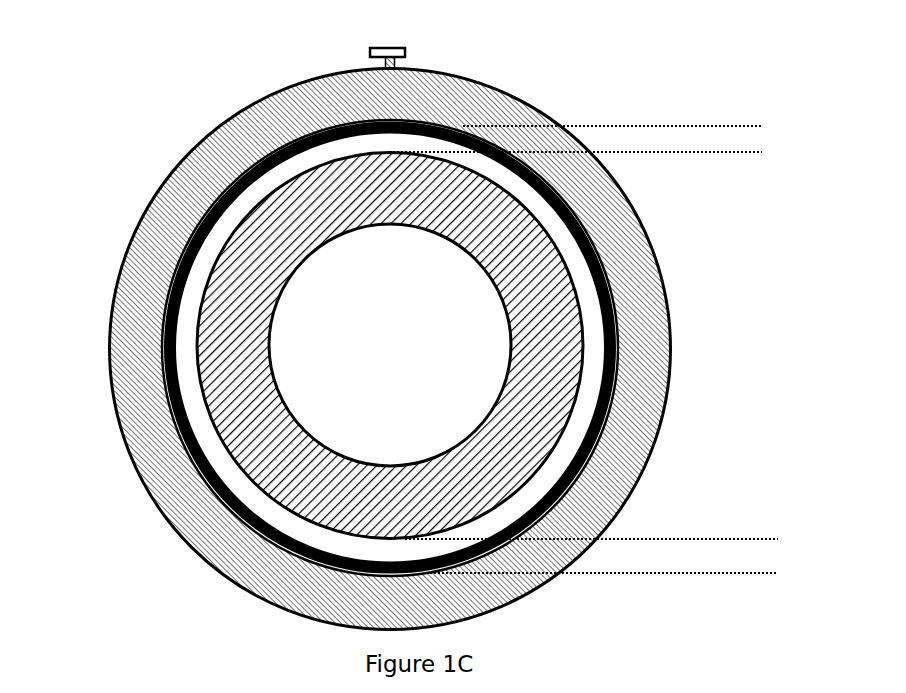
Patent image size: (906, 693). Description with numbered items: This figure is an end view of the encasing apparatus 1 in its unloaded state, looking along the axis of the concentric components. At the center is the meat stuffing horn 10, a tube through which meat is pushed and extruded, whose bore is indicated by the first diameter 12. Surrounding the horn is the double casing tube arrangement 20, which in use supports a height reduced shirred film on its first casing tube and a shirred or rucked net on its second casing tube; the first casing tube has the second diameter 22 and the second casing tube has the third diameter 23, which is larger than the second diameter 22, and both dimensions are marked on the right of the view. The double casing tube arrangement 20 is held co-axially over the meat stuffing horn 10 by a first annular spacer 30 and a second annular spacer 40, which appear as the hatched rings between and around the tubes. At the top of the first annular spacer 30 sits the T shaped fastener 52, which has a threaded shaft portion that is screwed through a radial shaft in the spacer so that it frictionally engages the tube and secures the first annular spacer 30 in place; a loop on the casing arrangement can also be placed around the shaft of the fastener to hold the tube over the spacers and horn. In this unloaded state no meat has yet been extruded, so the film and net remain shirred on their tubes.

The encasing apparatus 1 is at (132, 81).
The meat stuffing horn 10 is at (262, 402).
The first diameter 12 is at (390, 227).
The double casing tube arrangement 20 is at (198, 205).
The second diameter 22 is at (673, 537).
The third diameter 23 is at (760, 128).
The first annular spacer 30 is at (243, 104).
The second annular spacer 40 is at (196, 282).
The T shaped fastener 52 is at (430, 51).